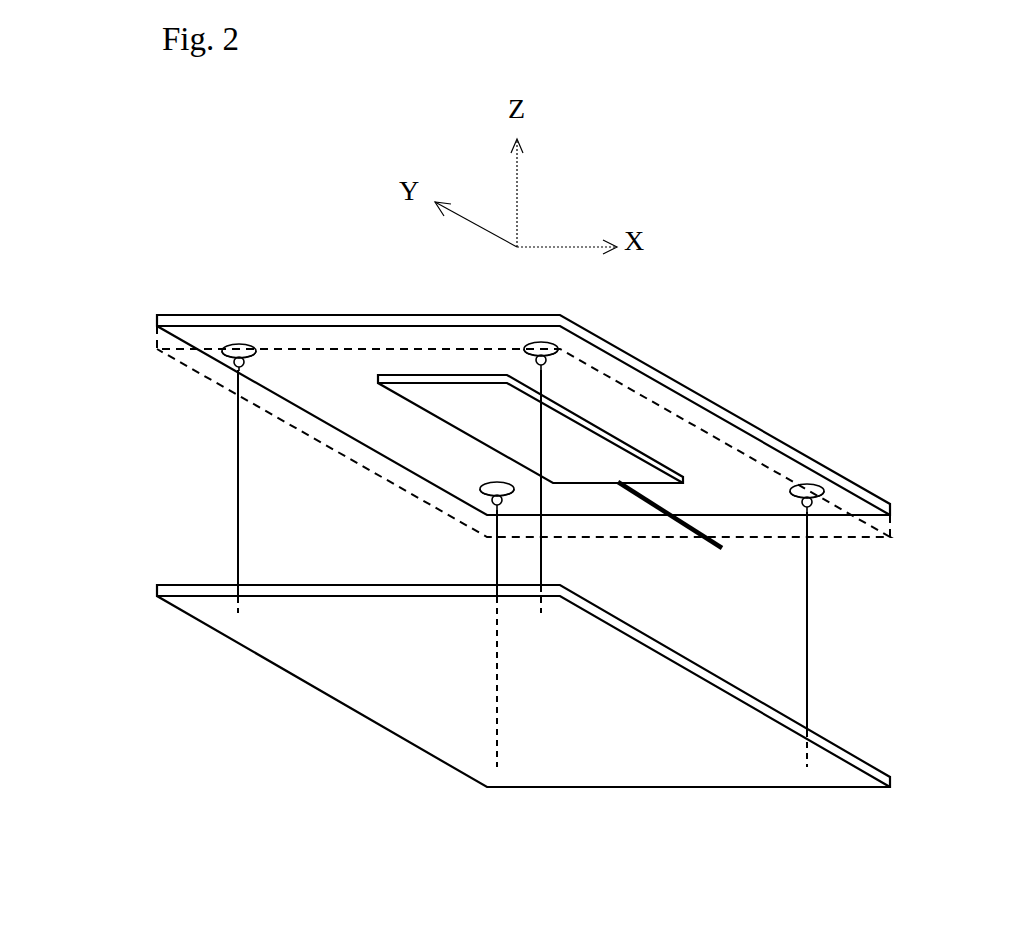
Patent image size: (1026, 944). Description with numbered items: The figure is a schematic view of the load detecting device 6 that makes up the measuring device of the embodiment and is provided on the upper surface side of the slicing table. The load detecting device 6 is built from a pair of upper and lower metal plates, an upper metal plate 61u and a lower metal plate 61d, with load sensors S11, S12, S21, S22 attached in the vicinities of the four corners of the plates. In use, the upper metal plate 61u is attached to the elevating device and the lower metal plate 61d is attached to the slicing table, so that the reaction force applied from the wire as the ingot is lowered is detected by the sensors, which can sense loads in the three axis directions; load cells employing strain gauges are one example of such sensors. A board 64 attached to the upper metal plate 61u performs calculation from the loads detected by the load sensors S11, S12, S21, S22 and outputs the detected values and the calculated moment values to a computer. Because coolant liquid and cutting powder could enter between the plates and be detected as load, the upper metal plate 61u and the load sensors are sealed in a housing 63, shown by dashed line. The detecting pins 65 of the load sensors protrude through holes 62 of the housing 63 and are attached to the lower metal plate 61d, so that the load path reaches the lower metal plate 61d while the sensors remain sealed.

The load detecting device 6 is at (744, 225).
The upper metal plate 61u is at (682, 384).
The lower metal plate 61d is at (650, 765).
The holes 62 is at (476, 441).
The housing 63 is at (670, 538).
The board 64 is at (500, 422).
The detecting pins 65 is at (246, 373).
The load sensor S11 is at (817, 493).
The load sensor S12 is at (480, 493).
The load sensor S21 is at (550, 345).
The load sensor S22 is at (222, 348).